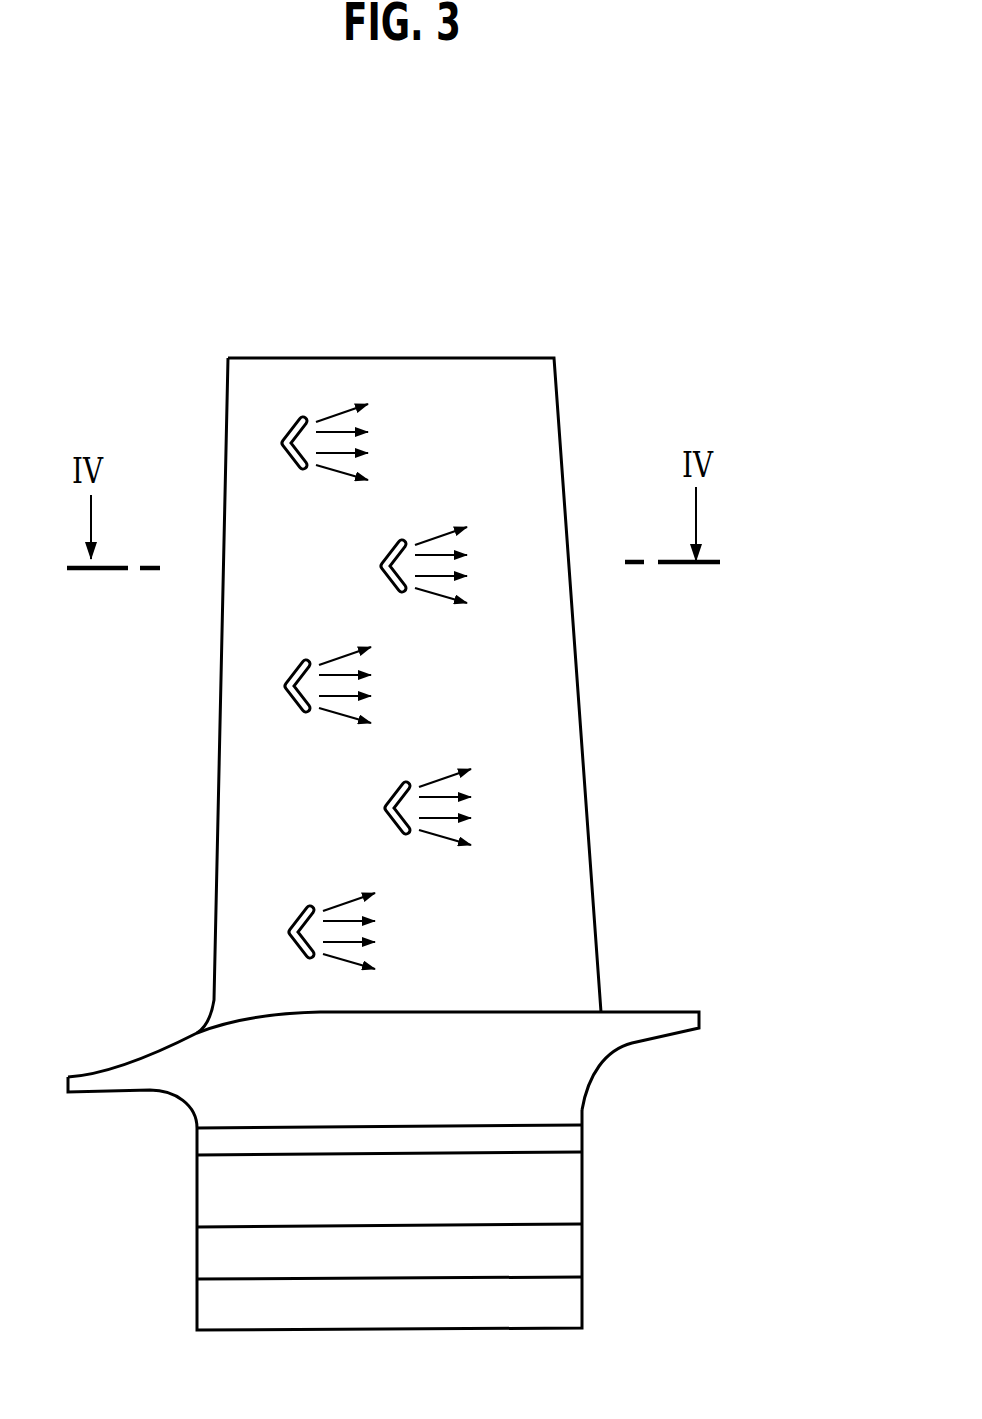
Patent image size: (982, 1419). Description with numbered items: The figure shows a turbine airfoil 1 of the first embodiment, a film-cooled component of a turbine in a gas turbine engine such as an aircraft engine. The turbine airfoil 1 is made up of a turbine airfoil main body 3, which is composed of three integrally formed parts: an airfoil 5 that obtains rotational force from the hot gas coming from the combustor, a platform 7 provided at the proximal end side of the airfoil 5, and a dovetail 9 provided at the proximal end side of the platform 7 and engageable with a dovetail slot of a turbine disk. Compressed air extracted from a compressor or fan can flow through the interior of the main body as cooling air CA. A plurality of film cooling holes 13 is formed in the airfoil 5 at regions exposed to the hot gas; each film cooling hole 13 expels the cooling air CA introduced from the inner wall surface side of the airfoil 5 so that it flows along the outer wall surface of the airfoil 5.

The turbine airfoil 1 is at (598, 258).
The turbine airfoil main body 3 is at (771, 915).
The airfoil 5 is at (597, 942).
The platform 7 is at (612, 1060).
The dovetail 9 is at (582, 1247).
The film cooling hole 13 is at (287, 428).
The cooling air CA is at (332, 432).